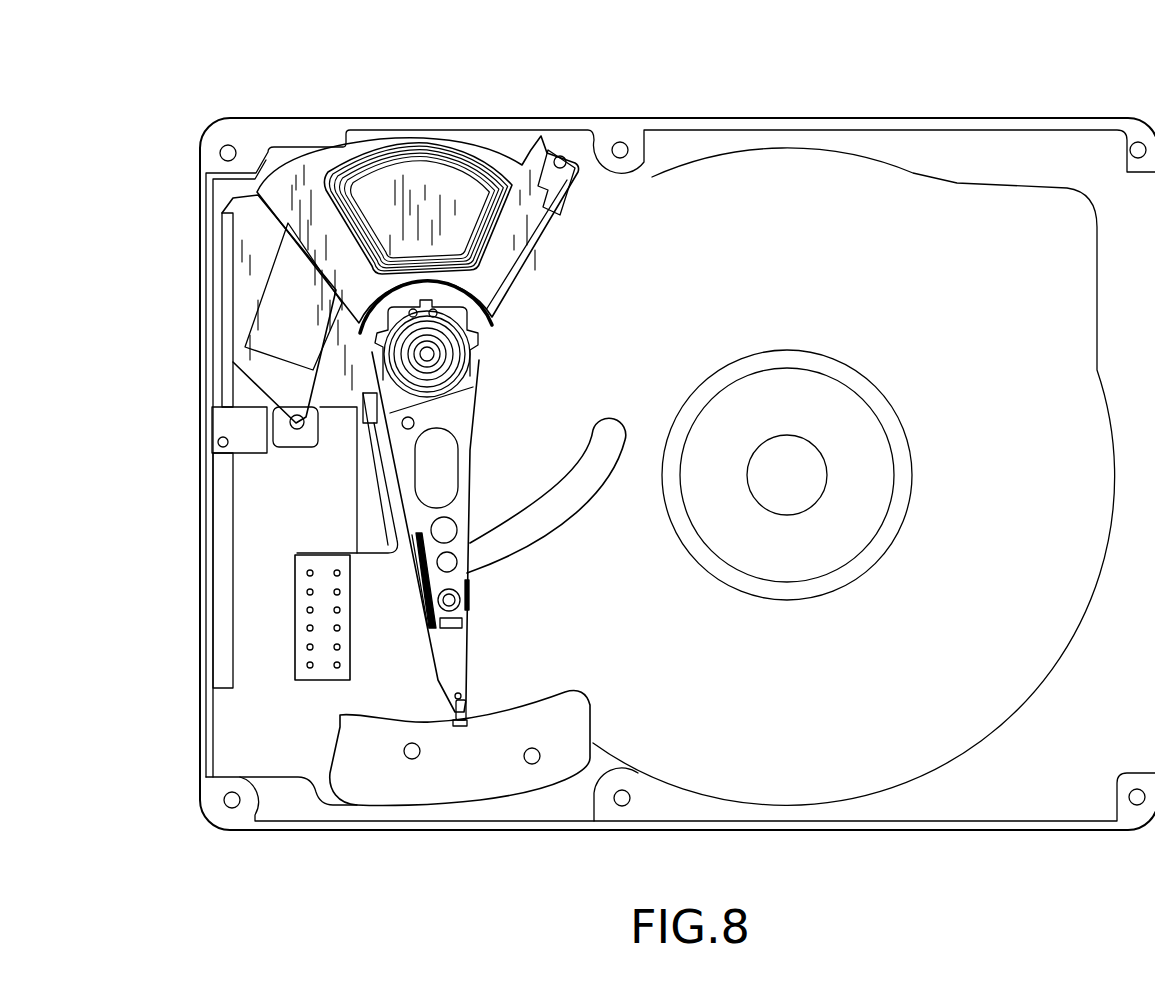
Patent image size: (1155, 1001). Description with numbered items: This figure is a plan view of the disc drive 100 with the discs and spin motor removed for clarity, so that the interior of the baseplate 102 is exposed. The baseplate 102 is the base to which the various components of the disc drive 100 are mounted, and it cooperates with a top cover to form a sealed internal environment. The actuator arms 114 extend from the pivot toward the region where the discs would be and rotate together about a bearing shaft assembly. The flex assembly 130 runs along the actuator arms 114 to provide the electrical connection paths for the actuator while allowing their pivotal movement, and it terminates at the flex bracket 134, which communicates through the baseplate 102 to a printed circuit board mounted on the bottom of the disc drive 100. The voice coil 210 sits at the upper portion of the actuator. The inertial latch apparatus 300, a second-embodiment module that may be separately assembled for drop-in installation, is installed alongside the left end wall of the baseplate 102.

The disc drive 100 is at (880, 92).
The baseplate 102 is at (272, 123).
The actuator arms 114 is at (468, 443).
The flex assembly 130 is at (386, 510).
The flex bracket 134 is at (300, 600).
The voice coil 210 is at (370, 153).
The inertial latch apparatus 300 is at (208, 332).